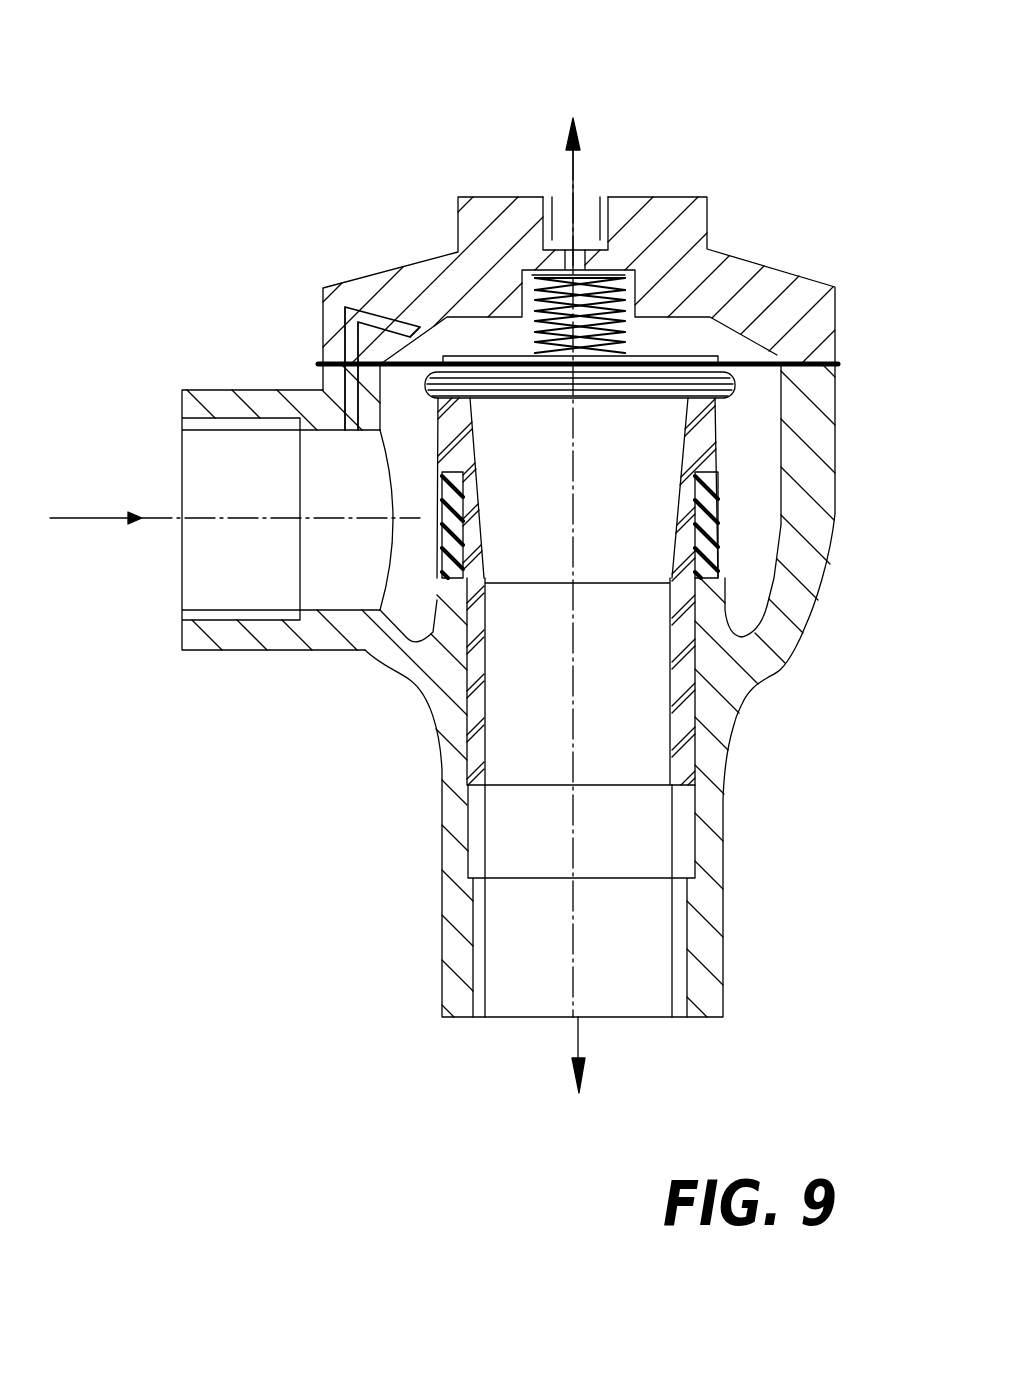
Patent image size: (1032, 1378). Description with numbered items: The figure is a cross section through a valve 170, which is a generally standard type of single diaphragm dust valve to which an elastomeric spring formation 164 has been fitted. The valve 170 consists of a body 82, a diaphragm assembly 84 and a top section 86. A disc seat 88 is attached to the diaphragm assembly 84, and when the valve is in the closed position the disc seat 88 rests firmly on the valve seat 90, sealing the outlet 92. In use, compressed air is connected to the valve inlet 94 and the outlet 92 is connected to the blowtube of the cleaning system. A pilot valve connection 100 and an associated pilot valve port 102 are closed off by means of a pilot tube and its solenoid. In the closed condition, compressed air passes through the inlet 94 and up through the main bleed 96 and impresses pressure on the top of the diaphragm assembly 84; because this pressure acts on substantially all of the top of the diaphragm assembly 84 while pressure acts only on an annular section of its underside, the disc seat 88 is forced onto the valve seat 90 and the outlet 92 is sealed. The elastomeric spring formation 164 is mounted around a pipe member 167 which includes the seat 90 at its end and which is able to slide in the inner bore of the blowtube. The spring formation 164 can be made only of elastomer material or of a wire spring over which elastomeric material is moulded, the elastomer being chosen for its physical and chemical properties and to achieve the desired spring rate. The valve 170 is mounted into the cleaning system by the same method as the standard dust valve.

The valve 170 is at (274, 142).
The body 82 is at (294, 660).
The diaphragm assembly 84 is at (748, 374).
The top section 86 is at (772, 290).
The disc seat 88 is at (645, 385).
The valve seat 90 is at (462, 418).
The outlet 92 is at (528, 997).
The valve inlet 94 is at (200, 582).
The main bleed 96 is at (372, 313).
The pilot valve connection 100 is at (560, 215).
The pilot valve port 102 is at (585, 250).
The elastomeric spring formation 164 is at (447, 547).
The pipe member 167 is at (473, 603).